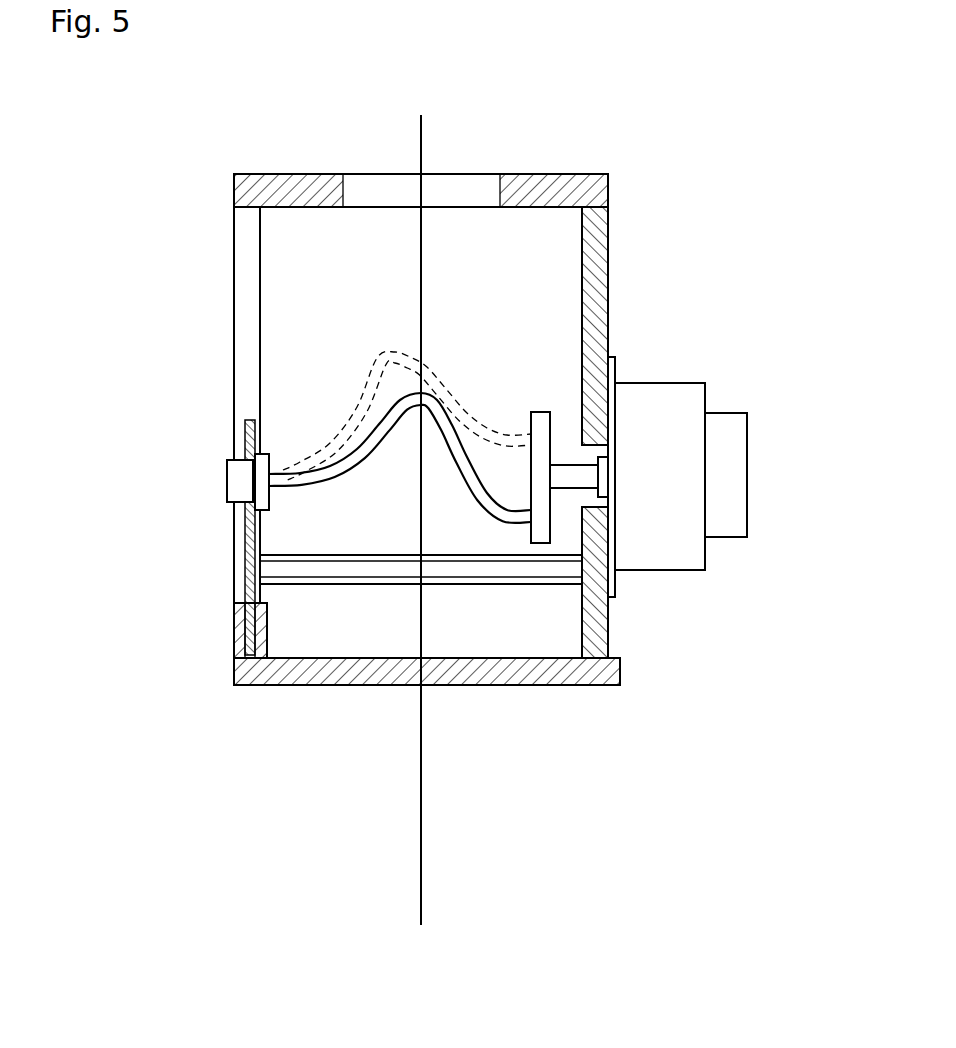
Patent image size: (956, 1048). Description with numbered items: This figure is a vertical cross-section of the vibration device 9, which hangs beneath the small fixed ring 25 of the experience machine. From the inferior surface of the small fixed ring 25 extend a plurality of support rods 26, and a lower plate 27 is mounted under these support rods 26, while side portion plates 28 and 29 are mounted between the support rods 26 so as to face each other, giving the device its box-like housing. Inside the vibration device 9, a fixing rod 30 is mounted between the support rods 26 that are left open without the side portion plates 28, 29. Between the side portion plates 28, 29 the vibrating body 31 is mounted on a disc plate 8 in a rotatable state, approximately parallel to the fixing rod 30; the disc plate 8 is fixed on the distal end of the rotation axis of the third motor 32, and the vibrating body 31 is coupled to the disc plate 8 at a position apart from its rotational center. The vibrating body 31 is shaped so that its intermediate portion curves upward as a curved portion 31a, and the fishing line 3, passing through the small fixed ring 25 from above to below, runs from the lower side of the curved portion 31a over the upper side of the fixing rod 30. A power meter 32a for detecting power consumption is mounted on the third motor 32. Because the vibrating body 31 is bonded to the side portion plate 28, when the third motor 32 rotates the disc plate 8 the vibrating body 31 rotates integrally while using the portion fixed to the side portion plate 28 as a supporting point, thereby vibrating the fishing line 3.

The fishing line 3 is at (421, 835).
The disc plate 8 is at (525, 412).
The vibration device 9 is at (428, 431).
The small fixed ring 25 is at (596, 175).
The support rods 26 is at (245, 280).
The lower plate 27 is at (294, 686).
The side portion plate 28 is at (246, 430).
The side portion plate 29 is at (608, 318).
The fixing rod 30 is at (548, 587).
The vibrating body 31 is at (293, 472).
The curved portion 31a is at (383, 415).
The third motor 32 is at (670, 540).
The power meter 32a is at (730, 527).